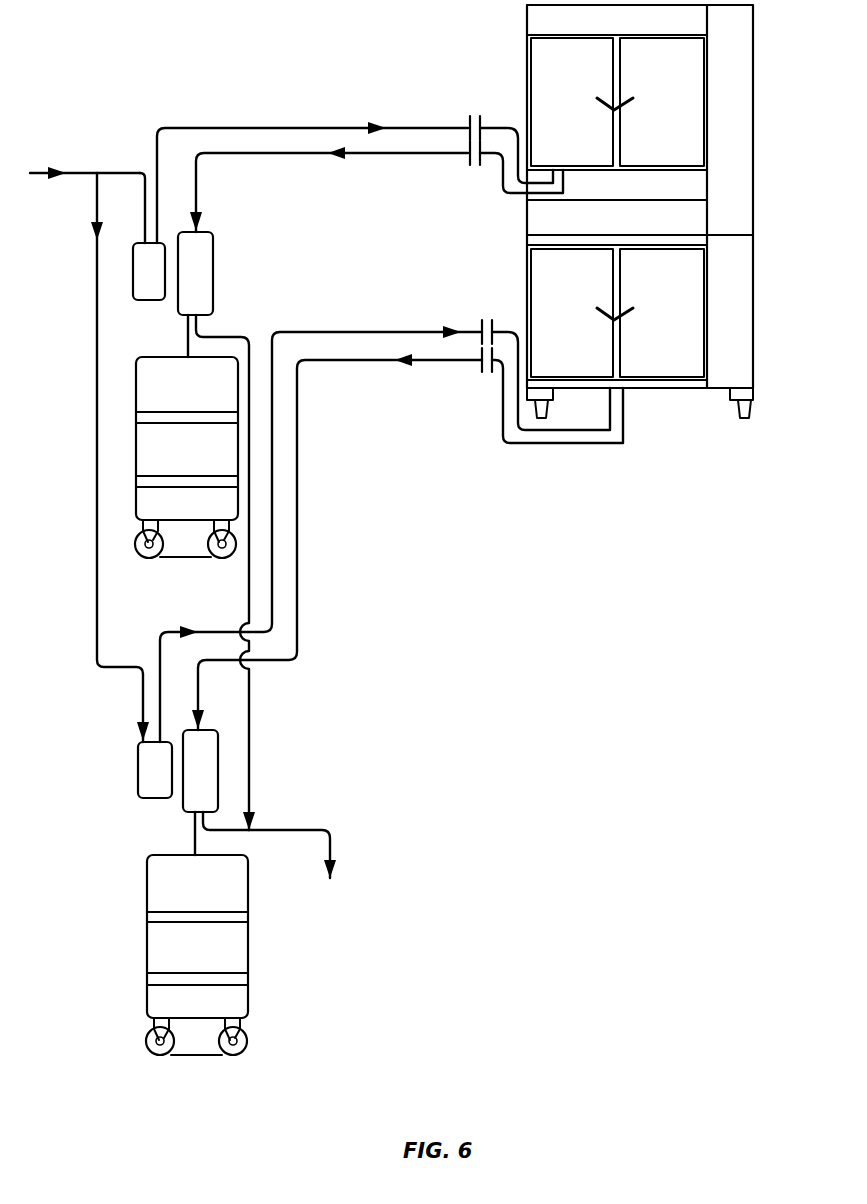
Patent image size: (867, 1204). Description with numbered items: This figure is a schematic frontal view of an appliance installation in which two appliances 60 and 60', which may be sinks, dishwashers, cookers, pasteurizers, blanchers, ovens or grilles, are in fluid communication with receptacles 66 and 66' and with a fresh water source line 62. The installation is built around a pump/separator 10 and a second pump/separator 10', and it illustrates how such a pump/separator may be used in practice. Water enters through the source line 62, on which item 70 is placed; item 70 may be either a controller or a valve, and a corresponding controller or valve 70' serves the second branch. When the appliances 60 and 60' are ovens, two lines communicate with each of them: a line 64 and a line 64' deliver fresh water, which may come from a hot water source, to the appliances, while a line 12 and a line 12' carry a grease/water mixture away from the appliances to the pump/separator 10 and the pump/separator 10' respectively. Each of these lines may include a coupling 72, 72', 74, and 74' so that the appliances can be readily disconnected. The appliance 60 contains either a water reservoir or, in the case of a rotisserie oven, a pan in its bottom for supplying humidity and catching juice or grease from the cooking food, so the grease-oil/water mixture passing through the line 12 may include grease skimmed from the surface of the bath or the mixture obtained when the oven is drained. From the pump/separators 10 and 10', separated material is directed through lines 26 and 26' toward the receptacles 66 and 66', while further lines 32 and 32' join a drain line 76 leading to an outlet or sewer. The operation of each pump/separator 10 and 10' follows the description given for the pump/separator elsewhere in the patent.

The pump/separator 10 is at (232, 273).
The line 12 is at (329, 189).
The outlet line to container 26 is at (120, 336).
The bypass line 32 is at (243, 563).
The appliance 60 is at (675, 120).
The source line 62 is at (78, 172).
The line 64 is at (296, 148).
The receptacle 66 is at (186, 457).
The controller or valve 70 is at (107, 236).
The coupling 72 is at (493, 134).
The coupling 74 is at (497, 168).
The line 64' is at (290, 534).
The controller or valve 70' is at (115, 770).
The coupling 72' is at (524, 364).
The coupling 74' is at (530, 395).
The line 12' is at (337, 542).
The pump/separator 10' is at (256, 771).
The outlet line (second) 26' is at (126, 833).
The bypass line (second) 32' is at (266, 805).
The drain line 76 is at (330, 850).
The receptacle 66' is at (197, 955).
The appliance 60' is at (680, 326).